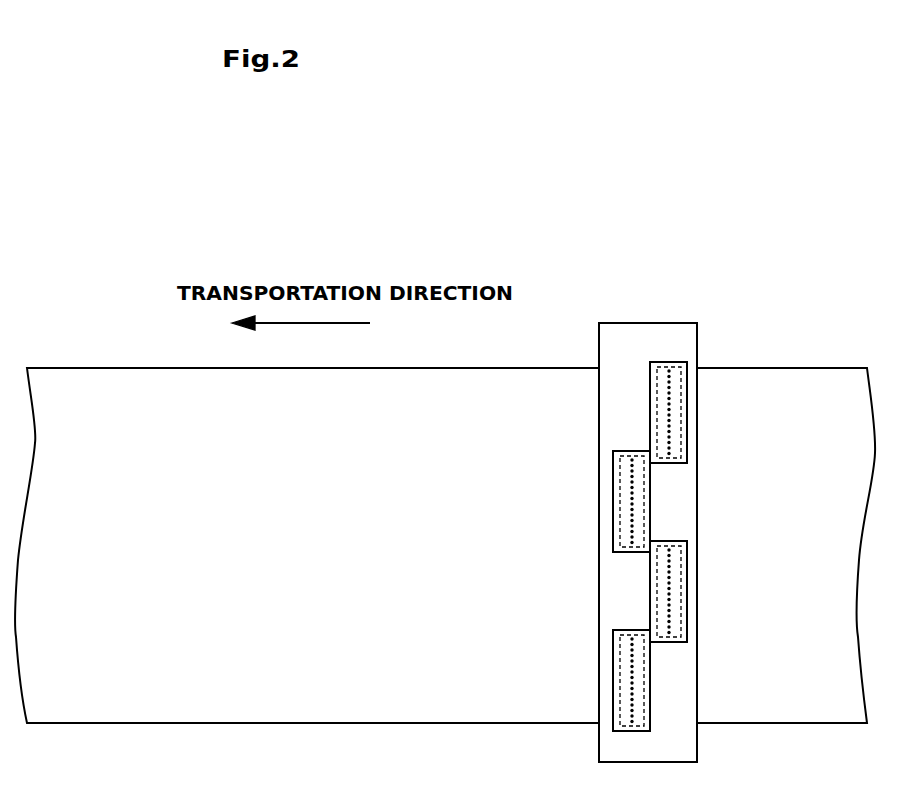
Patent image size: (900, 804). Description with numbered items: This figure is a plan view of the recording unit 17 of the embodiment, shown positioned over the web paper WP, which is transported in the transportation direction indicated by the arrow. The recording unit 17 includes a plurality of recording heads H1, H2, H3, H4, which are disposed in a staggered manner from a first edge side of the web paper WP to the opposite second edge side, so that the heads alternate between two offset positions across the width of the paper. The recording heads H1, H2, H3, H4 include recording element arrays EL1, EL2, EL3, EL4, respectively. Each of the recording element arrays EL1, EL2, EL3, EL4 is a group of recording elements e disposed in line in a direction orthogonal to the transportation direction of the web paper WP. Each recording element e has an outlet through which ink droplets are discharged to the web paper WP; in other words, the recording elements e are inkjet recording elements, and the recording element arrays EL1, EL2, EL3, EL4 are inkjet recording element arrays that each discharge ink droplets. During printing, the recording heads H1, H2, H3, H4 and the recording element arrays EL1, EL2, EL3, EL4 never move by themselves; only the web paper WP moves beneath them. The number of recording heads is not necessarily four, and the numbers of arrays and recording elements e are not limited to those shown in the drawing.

The recording unit 17 is at (613, 322).
The web paper WP is at (126, 373).
The recording head H1 is at (688, 384).
The recording head H2 is at (613, 472).
The recording head H3 is at (688, 565).
The recording head H4 is at (613, 652).
The recording element array EL1 is at (681, 406).
The recording element array EL2 is at (620, 500).
The recording element array EL3 is at (681, 589).
The recording element array EL4 is at (620, 678).
The recording element e is at (669, 371).